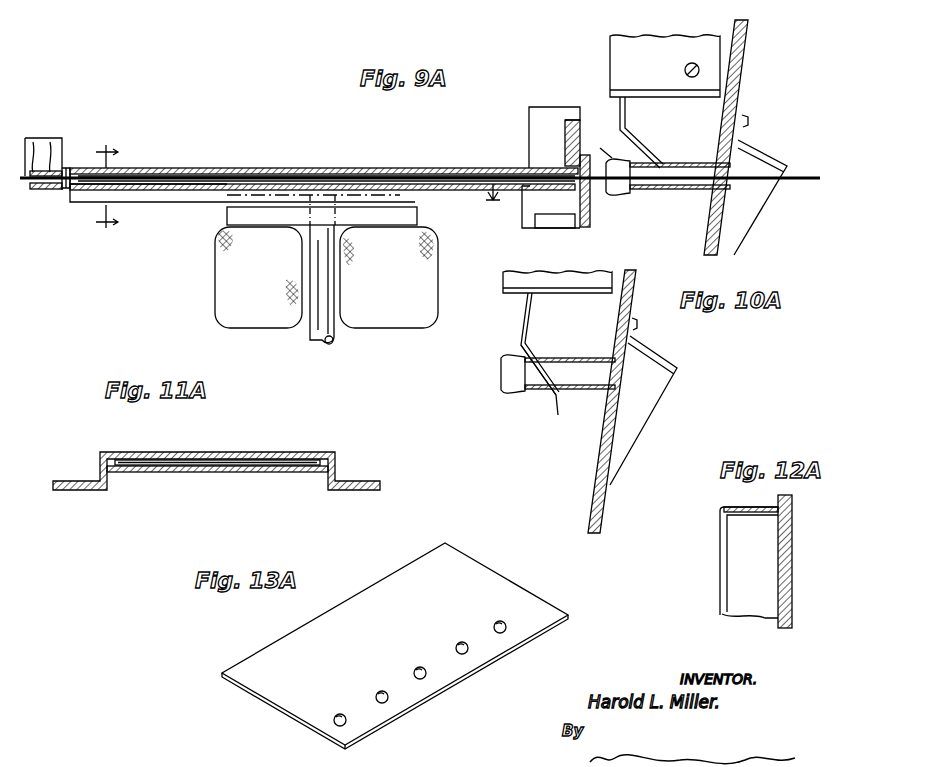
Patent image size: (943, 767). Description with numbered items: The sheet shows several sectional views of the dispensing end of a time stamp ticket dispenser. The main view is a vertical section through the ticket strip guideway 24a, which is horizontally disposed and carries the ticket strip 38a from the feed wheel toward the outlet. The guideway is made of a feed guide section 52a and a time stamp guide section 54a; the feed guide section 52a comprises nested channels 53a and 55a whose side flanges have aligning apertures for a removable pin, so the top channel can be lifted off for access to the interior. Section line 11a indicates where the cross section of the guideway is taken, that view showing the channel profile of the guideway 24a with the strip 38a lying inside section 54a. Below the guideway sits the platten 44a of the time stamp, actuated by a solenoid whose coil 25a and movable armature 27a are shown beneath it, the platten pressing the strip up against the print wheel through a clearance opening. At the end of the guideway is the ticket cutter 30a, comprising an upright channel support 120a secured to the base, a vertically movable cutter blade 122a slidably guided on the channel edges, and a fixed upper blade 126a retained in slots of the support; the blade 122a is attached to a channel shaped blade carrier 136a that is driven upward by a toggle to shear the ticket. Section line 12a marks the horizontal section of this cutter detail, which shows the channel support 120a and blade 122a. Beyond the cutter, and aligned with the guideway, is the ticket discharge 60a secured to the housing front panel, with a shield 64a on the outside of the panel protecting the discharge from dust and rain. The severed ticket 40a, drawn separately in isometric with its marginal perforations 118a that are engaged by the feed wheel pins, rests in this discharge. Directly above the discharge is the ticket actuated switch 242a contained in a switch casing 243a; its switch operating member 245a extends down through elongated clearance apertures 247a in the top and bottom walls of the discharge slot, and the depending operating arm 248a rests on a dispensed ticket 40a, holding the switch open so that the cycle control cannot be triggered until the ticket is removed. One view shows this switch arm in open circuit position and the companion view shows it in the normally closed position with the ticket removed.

In FIG. 9A, the feed guide section 52a is at (40, 138).
In FIG. 9A, the nested channel 53a is at (67, 166).
In FIG. 9A, the nested channel 55a is at (48, 190).
In FIG. 9A, the section line 11a— 11a is at (108, 189).
In FIG. 9A, the ticket strip guideway 24a is at (246, 164).
In FIG. 11A, the ticket strip guideway 24a is at (340, 454).
In FIG. 9A, the time stamp guide section 54a is at (416, 168).
In FIG. 11A, the time stamp guide section 54a is at (102, 460).
In FIG. 9A, the ticket strip 38a is at (180, 183).
In FIG. 11A, the ticket strip 38a is at (232, 452).
In FIG. 9A, the section line 12a— 12a is at (363, 192).
In FIG. 9A, the platten 44a is at (438, 218).
In FIG. 9A, the coil 25a is at (215, 295).
In FIG. 9A, the movable armature 27a is at (318, 335).
In FIG. 9A, the ticket cutter 30a is at (561, 100).
In FIG. 9A, the fixed upper blade 126a is at (555, 143).
In FIG. 9A, the cutter blade 122a is at (592, 222).
In FIG. 12A, the cutter blade 122a is at (778, 576).
In FIG. 9A, the channel support 120a is at (524, 228).
In FIG. 12A, the channel support 120a is at (720, 514).
In FIG. 9A, the blade carrier 136a is at (566, 230).
In FIG. 9A, the switch casing 243a is at (680, 40).
In FIG. 10A, the switch casing 243a is at (592, 280).
In FIG. 9A, the ticket actuated switch 242a is at (608, 30).
In FIG. 10A, the ticket actuated switch 242a is at (496, 292).
In FIG. 9A, the switch operating member 245a is at (618, 120).
In FIG. 10A, the switch operating member 245a is at (513, 344).
In FIG. 9A, the operating arm 248a is at (604, 147).
In FIG. 10A, the operating arm 248a is at (556, 400).
In FIG. 9A, the clearance apertures 247a is at (638, 190).
In FIG. 10A, the clearance apertures 247a is at (522, 392).
In FIG. 9A, the ticket discharge 60a is at (698, 190).
In FIG. 10A, the ticket discharge 60a is at (592, 372).
In FIG. 9A, the shield 64a is at (762, 152).
In FIG. 10A, the shield 64a is at (660, 352).
In FIG. 9A, the severed ticket 40a is at (802, 180).
In FIG. 13A, the severed ticket 40a is at (496, 578).
In FIG. 13A, the marginal perforations 118a is at (388, 700).